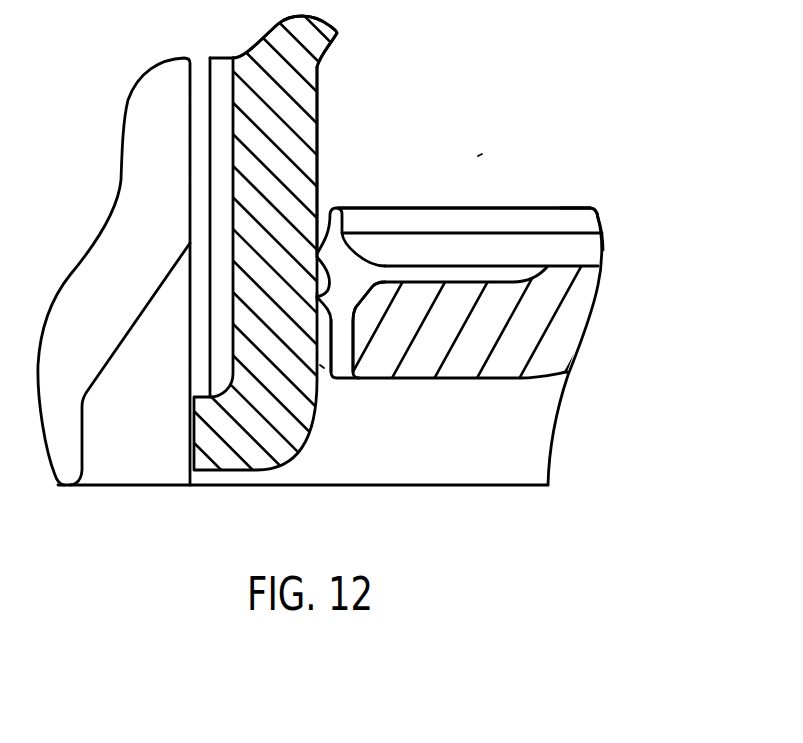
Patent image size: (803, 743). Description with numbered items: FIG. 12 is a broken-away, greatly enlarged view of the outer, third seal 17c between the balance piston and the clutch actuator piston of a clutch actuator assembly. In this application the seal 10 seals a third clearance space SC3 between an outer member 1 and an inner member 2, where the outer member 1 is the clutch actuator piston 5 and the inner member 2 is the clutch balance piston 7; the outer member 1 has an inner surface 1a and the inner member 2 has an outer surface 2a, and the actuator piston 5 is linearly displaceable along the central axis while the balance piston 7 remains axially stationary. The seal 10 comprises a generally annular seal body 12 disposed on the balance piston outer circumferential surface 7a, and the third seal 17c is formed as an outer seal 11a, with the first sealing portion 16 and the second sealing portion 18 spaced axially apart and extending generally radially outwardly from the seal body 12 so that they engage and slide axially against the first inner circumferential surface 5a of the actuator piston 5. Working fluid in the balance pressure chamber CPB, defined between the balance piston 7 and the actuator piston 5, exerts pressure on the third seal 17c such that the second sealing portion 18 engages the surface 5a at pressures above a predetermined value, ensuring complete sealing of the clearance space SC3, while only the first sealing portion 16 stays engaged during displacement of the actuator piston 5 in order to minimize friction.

The outer member 1 is at (377, 77).
The inner surface 1a is at (320, 297).
The inner member 2 is at (505, 403).
The outer surface 2a is at (327, 125).
The clutch actuator piston 5 is at (308, 65).
The first inner circumferential surface 5a is at (318, 153).
The clutch balance piston 7 is at (562, 340).
The balance piston outer circumferential surface 7a is at (352, 347).
The seal 10 is at (638, 225).
The outer seal 11a is at (513, 205).
The seal body 12 is at (353, 240).
The first sealing portion 16 is at (312, 253).
The third seal 17c is at (562, 212).
The second sealing portion 18 is at (312, 295).
The balance pressure chamber CPB is at (480, 156).
The third clearance space SC3 is at (322, 367).